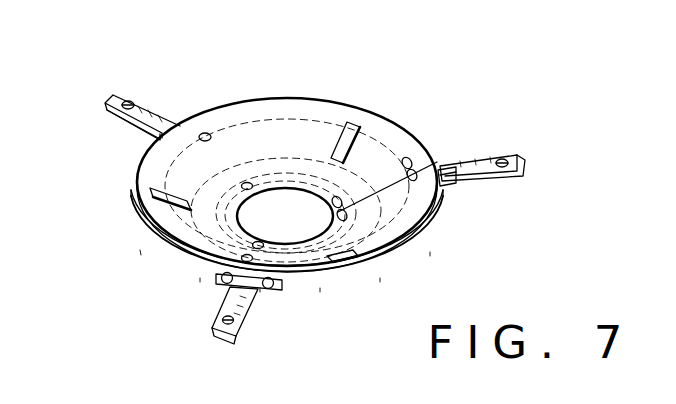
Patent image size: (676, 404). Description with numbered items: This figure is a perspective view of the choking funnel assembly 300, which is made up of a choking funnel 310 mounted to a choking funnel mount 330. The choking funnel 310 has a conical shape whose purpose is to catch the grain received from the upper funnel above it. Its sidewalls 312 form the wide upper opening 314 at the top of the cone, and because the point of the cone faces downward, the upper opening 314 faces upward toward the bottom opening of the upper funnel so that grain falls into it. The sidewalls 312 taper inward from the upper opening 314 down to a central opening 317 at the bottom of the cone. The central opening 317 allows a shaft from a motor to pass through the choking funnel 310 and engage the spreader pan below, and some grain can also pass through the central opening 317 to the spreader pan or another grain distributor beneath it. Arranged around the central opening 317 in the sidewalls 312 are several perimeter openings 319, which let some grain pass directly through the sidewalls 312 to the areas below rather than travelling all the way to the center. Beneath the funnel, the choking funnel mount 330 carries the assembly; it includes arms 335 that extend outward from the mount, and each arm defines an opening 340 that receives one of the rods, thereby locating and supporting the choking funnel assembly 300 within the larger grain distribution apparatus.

The choking funnel assembly 300 is at (476, 119).
The choking funnel 310 is at (284, 98).
The sidewalls 312 is at (237, 125).
The upper opening 314 is at (190, 167).
The central opening 317 is at (285, 213).
The perimeter openings 319 is at (354, 127).
The choking funnel mount 330 is at (398, 268).
The arms 335 is at (148, 110).
The openings 340 is at (126, 95).